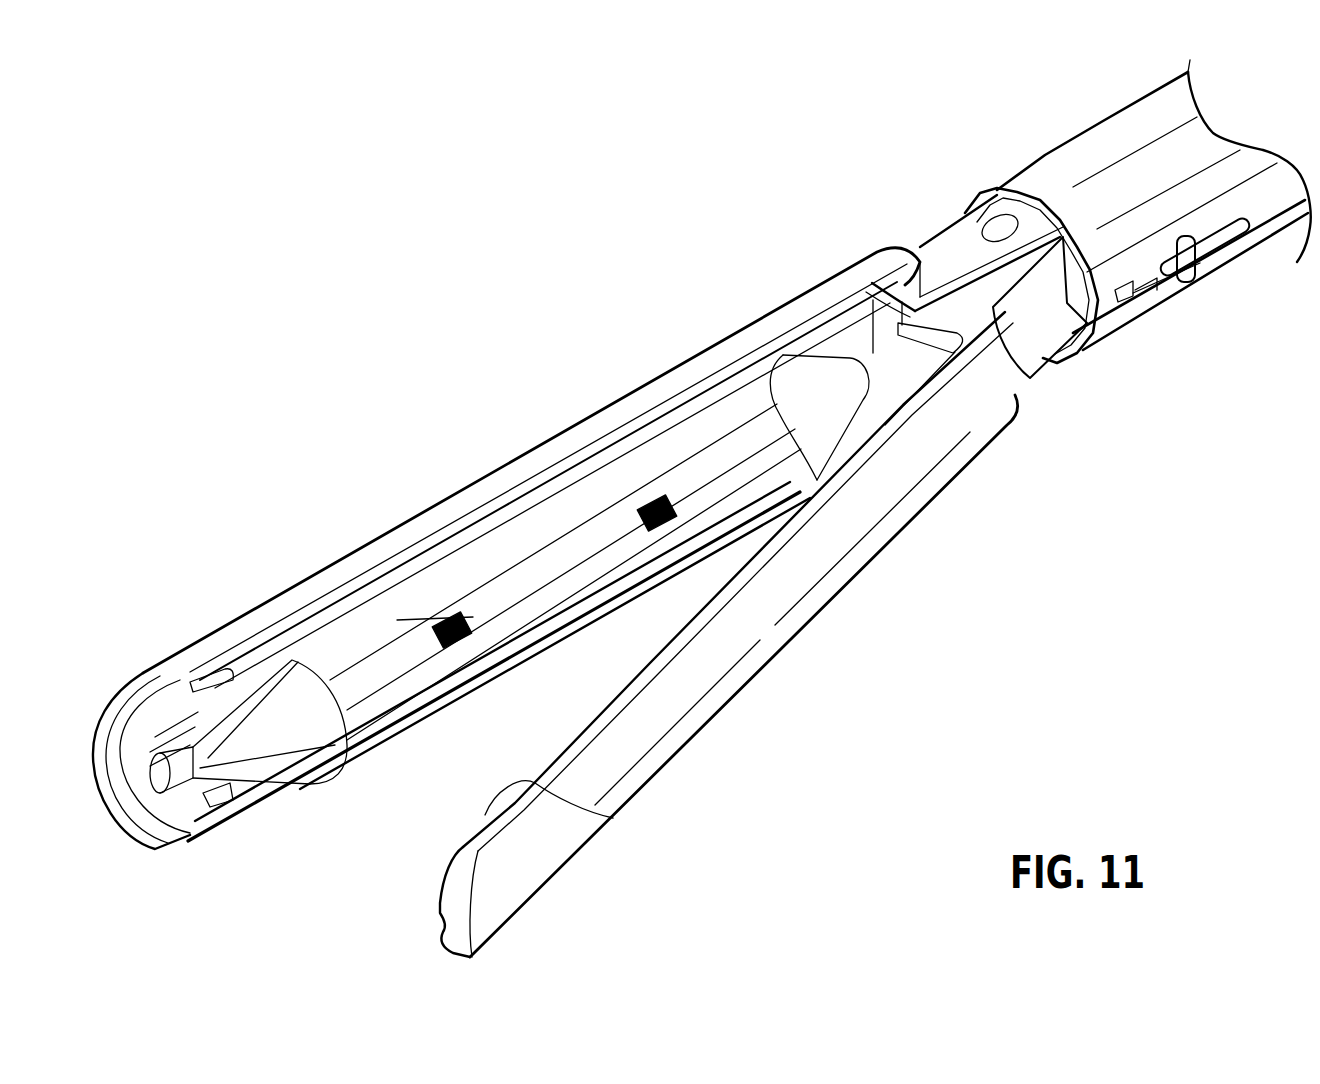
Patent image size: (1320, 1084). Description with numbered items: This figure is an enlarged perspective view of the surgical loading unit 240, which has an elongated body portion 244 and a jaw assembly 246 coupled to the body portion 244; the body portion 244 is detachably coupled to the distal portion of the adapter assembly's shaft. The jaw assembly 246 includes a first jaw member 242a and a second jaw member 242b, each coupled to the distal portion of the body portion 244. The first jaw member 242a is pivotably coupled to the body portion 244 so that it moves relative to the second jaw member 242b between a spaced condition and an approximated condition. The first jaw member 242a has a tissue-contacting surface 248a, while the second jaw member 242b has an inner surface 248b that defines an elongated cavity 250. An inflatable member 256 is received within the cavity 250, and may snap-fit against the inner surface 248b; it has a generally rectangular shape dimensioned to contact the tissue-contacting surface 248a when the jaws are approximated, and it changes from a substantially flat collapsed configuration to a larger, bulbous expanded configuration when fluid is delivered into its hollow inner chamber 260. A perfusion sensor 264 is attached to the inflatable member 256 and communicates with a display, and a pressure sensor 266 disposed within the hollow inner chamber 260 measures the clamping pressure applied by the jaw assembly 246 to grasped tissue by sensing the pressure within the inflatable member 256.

The surgical loading unit 240 is at (943, 125).
The first jaw member 242a is at (657, 737).
The second jaw member 242b is at (143, 680).
The elongated body portion 244 is at (1110, 128).
The jaw assembly 246 is at (637, 353).
The tissue-contacting surface 248a is at (600, 817).
The inner surface 248b is at (200, 795).
The elongated cavity 250 is at (177, 711).
The inflatable member 256 is at (388, 735).
The hollow inner chamber 260 is at (363, 697).
The perfusion sensor 264 is at (457, 643).
The pressure sensor 266 is at (652, 500).